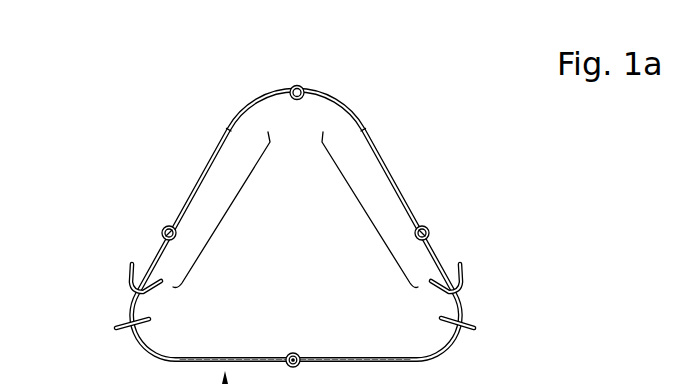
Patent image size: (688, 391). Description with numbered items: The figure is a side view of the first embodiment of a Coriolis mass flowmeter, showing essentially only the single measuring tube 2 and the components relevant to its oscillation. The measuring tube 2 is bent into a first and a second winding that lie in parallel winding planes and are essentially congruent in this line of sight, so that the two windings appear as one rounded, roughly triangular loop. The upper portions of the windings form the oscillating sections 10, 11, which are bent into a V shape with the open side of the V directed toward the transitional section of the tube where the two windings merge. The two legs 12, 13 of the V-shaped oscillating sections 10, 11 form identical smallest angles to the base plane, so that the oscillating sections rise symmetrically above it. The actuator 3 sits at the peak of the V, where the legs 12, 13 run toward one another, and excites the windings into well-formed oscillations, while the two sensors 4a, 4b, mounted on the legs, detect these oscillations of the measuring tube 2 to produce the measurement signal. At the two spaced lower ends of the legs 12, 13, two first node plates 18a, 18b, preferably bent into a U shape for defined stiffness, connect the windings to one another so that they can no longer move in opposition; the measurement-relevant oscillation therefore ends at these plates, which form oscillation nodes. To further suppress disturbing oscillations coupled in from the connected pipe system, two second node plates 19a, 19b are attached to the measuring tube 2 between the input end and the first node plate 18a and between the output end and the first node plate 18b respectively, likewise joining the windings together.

The measuring tube 2 is at (390, 156).
The actuator 3 is at (296, 86).
The sensor 4a is at (165, 228).
The sensor 4b is at (428, 232).
The oscillating section 10 is at (604, 202).
The oscillating section 11 is at (561, 118).
The leg 12 is at (225, 215).
The leg 13 is at (368, 217).
The first node plate 18a is at (128, 263).
The first node plate 18b is at (464, 277).
The second node plate 19a is at (118, 328).
The second node plate 19b is at (473, 332).